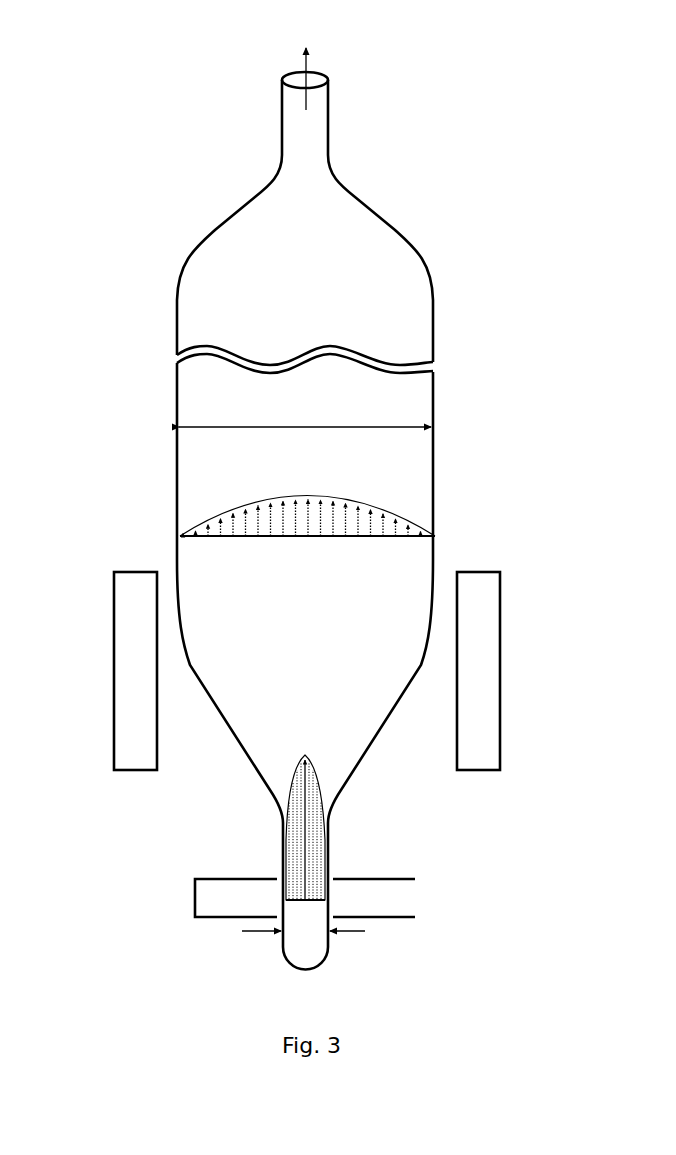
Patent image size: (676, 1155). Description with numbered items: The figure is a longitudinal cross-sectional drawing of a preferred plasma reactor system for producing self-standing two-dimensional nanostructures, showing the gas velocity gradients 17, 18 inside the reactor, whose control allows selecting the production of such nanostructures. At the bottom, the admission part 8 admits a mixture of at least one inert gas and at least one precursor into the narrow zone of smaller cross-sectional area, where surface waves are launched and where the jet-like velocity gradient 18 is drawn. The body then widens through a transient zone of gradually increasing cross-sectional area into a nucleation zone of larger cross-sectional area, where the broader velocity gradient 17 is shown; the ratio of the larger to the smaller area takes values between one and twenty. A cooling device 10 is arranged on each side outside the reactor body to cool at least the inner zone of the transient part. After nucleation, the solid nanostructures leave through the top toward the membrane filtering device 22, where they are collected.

The admission part 8 is at (331, 944).
The cooling device 10 is at (112, 672).
The gas velocity gradient 17 is at (449, 532).
The gas velocity gradient 18 is at (332, 845).
The membrane filtering device 22 is at (328, 79).